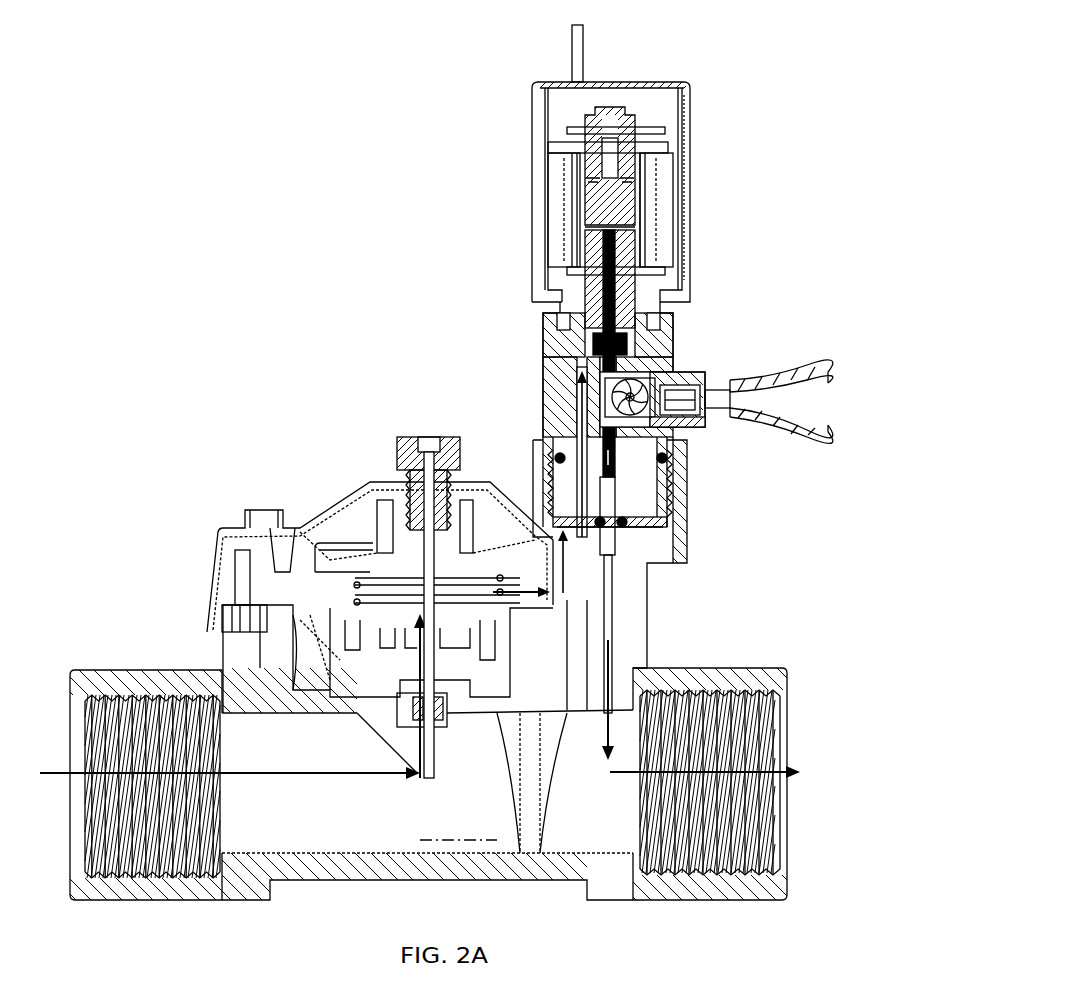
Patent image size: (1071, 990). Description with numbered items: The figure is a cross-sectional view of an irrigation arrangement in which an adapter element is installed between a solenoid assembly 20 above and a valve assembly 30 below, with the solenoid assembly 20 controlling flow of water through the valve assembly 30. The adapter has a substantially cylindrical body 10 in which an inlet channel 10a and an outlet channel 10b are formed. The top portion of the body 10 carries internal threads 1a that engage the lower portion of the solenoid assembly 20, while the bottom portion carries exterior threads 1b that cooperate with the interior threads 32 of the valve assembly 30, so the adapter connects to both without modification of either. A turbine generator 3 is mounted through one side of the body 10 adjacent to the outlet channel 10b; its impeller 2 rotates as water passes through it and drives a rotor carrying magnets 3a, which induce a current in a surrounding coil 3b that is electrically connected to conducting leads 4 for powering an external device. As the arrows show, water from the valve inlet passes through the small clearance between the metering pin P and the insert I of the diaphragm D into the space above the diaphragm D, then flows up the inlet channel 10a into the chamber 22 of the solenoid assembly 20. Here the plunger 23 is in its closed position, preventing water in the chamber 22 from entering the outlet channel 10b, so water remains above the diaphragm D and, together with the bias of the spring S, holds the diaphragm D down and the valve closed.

The solenoid assembly 20 is at (655, 82).
The chamber 22 is at (552, 333).
The spring S is at (592, 197).
The plunger 23 is at (627, 307).
The internal threads 1a is at (650, 352).
The impeller 2 is at (633, 387).
The turbine generator 3 is at (707, 370).
The magnets 3a is at (690, 400).
The coil 3b is at (660, 423).
The conducting leads 4 is at (828, 427).
The body 10 is at (555, 380).
The inlet channel 10a is at (577, 420).
The outlet channel 10b is at (603, 493).
The exterior threads 1b is at (660, 503).
The interior threads 32 is at (562, 487).
The metering pin P is at (430, 573).
The diaphragm D is at (403, 697).
The insert I is at (420, 713).
The valve assembly 30 is at (207, 665).